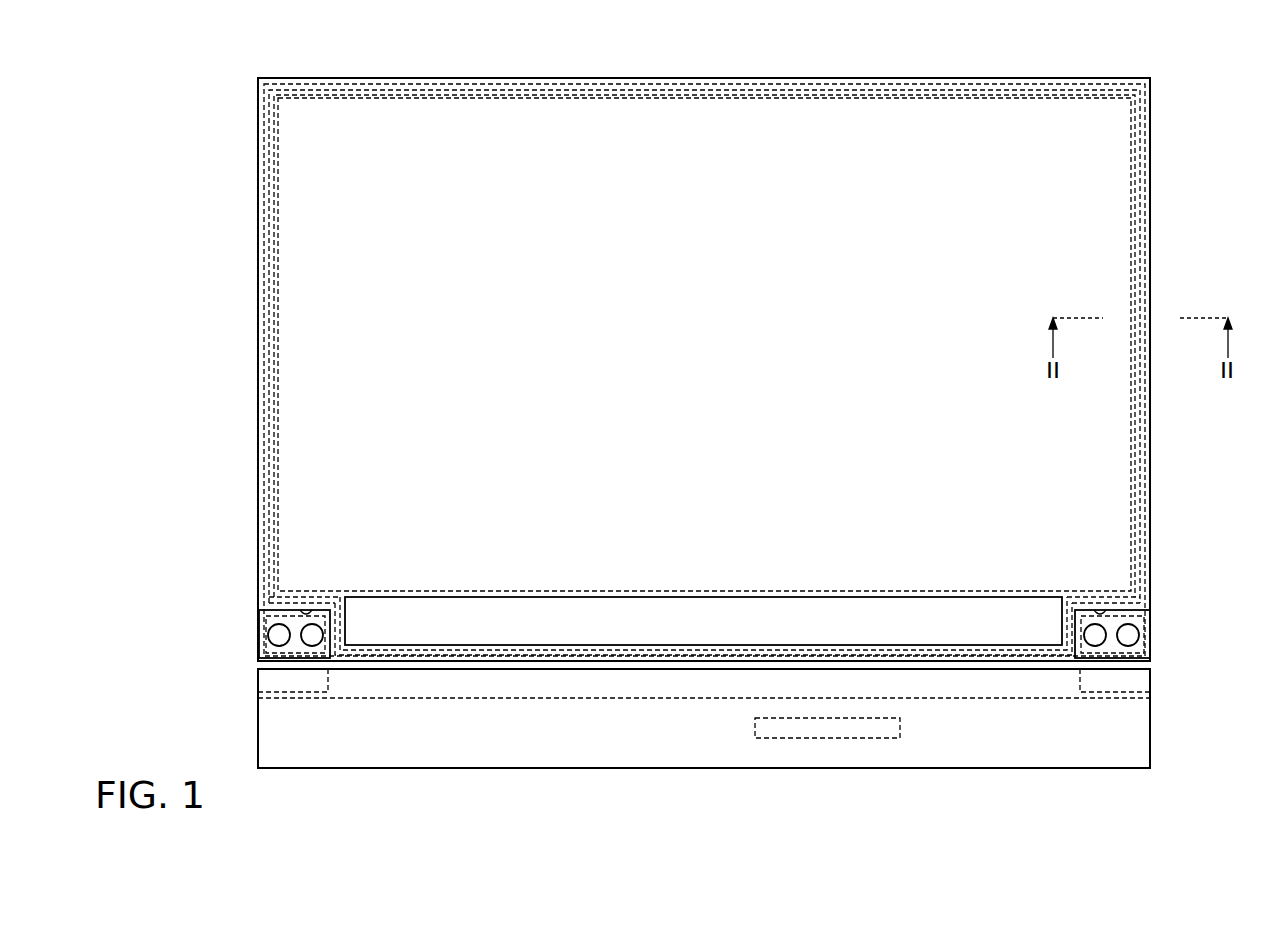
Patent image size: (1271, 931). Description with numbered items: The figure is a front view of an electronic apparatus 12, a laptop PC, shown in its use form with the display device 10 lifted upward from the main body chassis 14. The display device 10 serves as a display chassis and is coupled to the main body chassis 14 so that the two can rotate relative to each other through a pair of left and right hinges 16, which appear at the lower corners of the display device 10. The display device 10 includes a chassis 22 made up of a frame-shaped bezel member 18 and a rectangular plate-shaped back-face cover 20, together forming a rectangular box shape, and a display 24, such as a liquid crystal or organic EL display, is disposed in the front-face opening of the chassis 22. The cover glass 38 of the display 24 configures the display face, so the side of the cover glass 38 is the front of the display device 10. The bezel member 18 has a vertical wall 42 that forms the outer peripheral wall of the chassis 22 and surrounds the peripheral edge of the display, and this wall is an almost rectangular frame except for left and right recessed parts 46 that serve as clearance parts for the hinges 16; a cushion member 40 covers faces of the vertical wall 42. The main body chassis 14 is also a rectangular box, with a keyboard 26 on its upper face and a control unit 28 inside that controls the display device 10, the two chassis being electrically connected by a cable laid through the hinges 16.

The display device 10 is at (240, 220).
The electronic apparatus 12 is at (191, 58).
The main body chassis 14 is at (240, 733).
The hinge 16 is at (258, 628).
The bezel member 18 is at (1152, 548).
The back-face cover 20 is at (771, 624).
The chassis 22 is at (758, 370).
The display 24 is at (704, 343).
The cover glass 38 is at (617, 98).
The keyboard 26 is at (519, 678).
The control unit 28 is at (823, 738).
The cushion member 40 is at (930, 84).
The vertical wall 42 is at (260, 406).
The recessed part 46 is at (306, 608).